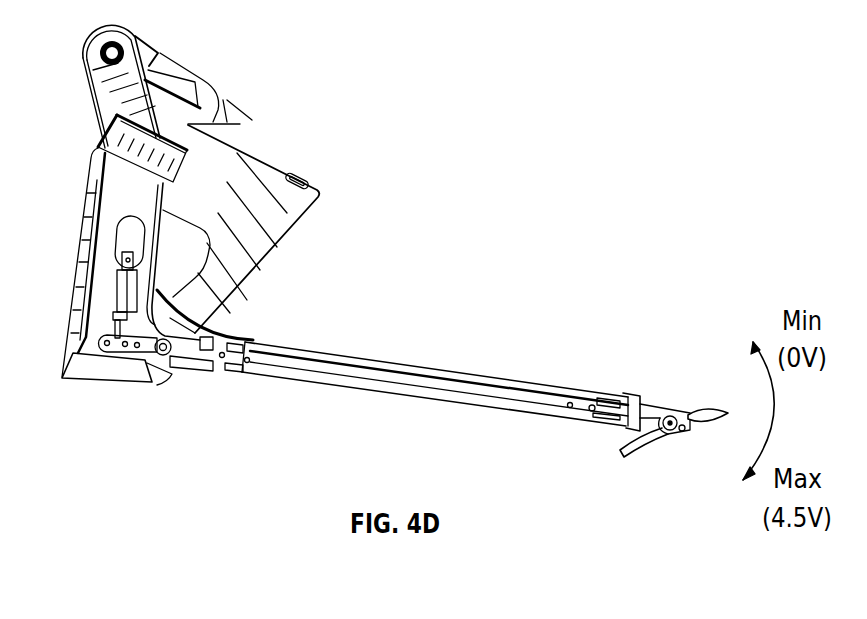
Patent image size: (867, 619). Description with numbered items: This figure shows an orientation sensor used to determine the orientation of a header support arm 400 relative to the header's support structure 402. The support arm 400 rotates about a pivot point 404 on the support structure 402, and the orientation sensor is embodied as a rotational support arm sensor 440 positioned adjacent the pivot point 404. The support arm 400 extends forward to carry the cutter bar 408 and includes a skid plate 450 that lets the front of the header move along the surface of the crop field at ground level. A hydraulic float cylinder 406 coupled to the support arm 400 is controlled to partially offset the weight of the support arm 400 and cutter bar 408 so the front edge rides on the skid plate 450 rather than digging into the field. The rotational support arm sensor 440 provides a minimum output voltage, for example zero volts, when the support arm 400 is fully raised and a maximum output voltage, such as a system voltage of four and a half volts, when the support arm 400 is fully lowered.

The support arm 400 is at (527, 382).
The support structure 402 is at (88, 203).
The pivot point 404 is at (150, 378).
The hydraulic float cylinder 406 is at (118, 290).
The cutter bar 408 is at (713, 415).
The rotational support arm sensor 440 is at (173, 358).
The skid plate 450 is at (637, 453).